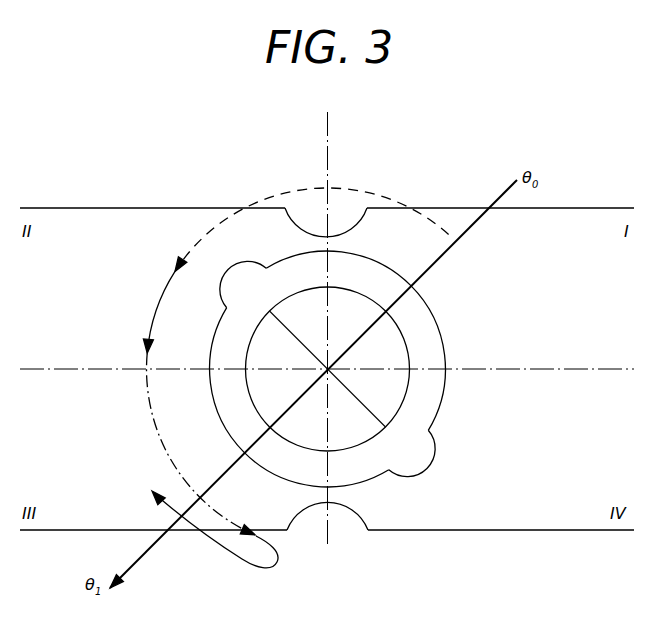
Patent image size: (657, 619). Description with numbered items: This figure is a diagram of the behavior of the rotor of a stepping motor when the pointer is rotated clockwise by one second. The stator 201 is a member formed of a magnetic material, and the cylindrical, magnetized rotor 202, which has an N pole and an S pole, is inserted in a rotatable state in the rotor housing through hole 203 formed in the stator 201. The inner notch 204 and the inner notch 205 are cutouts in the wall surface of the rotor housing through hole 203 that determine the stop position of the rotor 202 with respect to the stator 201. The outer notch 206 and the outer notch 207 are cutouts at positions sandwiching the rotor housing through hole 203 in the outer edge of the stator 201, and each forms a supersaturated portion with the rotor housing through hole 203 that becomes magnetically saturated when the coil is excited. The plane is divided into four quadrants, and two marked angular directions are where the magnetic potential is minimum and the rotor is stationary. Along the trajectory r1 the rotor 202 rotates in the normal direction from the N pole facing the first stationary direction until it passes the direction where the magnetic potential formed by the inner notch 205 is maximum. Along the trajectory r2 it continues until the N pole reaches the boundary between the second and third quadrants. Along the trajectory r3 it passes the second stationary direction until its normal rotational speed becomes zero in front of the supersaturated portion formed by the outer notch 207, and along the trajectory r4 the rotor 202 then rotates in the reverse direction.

The stator 201 is at (72, 216).
The rotor 202 is at (392, 323).
The rotor housing through hole 203 is at (447, 398).
The inner notch 204 is at (440, 462).
The inner notch 205 is at (246, 260).
The outer notch 206 is at (357, 222).
The outer notch 207 is at (300, 513).
The trajectory r1 is at (297, 190).
The trajectory r2 is at (152, 316).
The trajectory r3 is at (155, 428).
The trajectory r4 is at (213, 546).